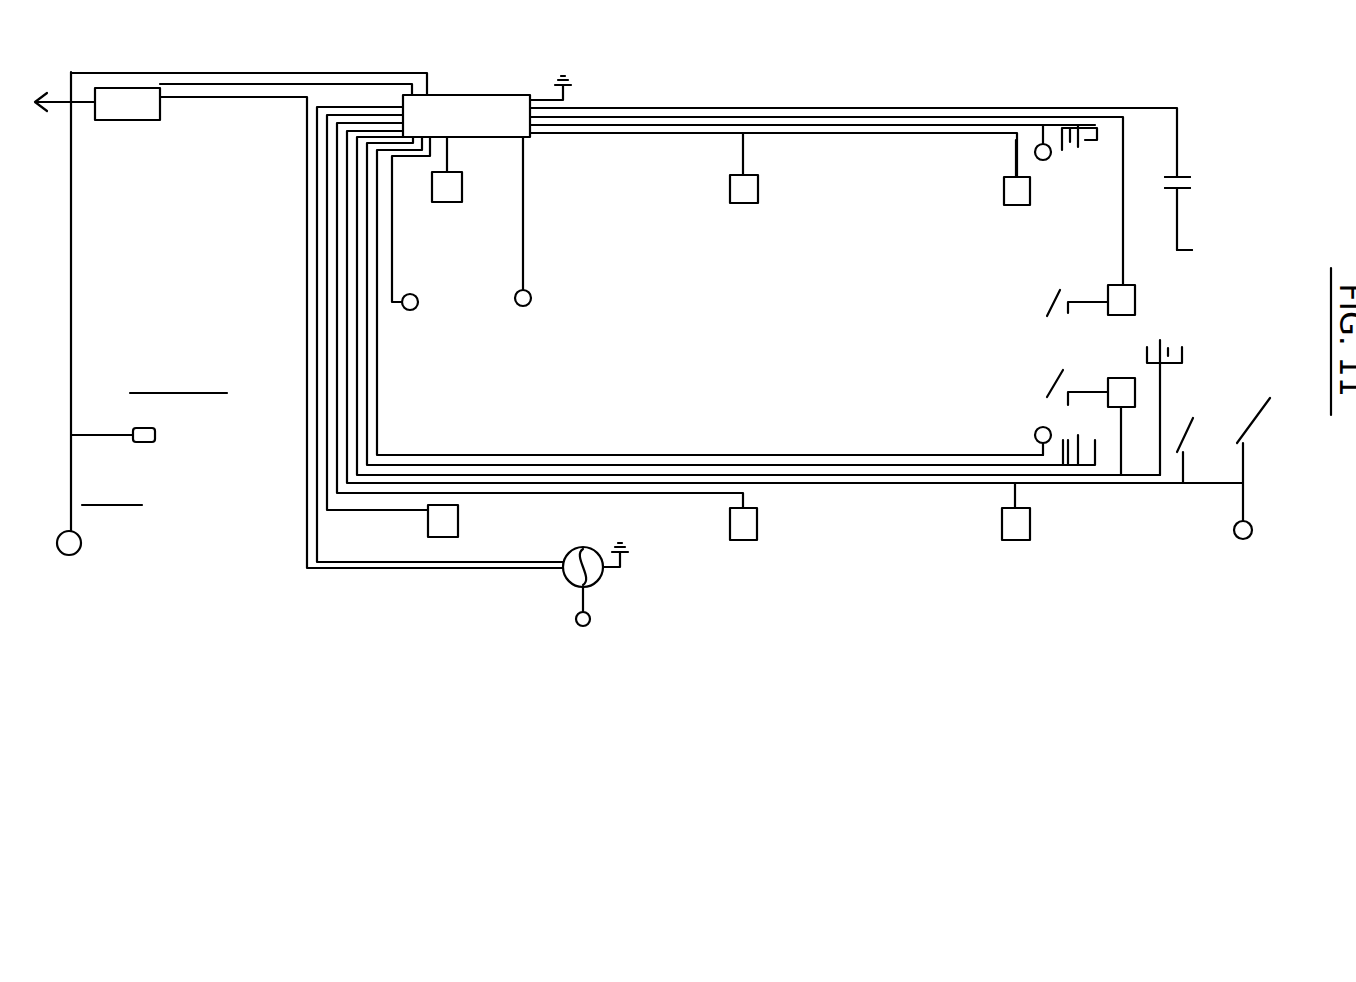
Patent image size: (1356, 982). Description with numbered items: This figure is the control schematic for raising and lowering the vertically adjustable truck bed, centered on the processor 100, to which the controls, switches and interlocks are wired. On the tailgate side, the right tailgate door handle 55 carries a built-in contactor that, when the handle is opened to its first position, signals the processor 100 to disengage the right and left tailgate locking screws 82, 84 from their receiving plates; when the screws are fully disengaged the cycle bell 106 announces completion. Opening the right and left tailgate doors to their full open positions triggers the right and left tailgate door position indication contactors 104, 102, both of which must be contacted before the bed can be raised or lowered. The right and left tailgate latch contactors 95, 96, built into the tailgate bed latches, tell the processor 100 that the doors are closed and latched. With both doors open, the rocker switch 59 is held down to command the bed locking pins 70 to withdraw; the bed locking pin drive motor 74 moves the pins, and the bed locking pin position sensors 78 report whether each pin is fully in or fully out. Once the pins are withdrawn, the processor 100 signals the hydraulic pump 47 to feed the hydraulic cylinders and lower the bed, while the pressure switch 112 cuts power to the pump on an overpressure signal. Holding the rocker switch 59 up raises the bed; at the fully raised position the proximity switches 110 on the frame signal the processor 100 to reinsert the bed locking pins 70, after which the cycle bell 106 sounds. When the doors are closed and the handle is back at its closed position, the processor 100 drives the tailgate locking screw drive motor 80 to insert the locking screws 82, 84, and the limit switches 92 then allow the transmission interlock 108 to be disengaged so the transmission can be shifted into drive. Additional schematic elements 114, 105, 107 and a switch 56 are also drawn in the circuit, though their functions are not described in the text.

The processor 100 is at (461, 77).
The transmitter 114 is at (125, 133).
The right tailgate door position indication contactor 104 is at (1086, 110).
The right tailgate door latch contactor 95 is at (1203, 194).
The right tailgate door handle 55 is at (1203, 262).
The proximity switches 110 is at (1052, 173).
The limit switches 92 is at (1052, 268).
The tailgate locking screw drive motor 80 is at (1068, 346).
The left tailgate locking screw 84 is at (1068, 346).
The right tailgate locking screw 82 is at (1120, 330).
The left tailgate latch contactor 96 is at (1172, 333).
The left tailgate door position indication contactor 102 is at (1075, 490).
The cycle bell 106 is at (1254, 553).
The switch 56 is at (1270, 388).
The rocker switch 59 is at (1197, 403).
The bed locking pins 70 is at (880, 384).
The bed locking pin drive motor 74 is at (880, 384).
The bed locking pin position sensors 78 is at (1023, 220).
The relay 105 is at (547, 308).
The transmission interlock 108 is at (150, 457).
The ignition terminal 107 is at (88, 575).
The hydraulic pump 47 is at (603, 602).
The pressure switch 112 is at (588, 640).